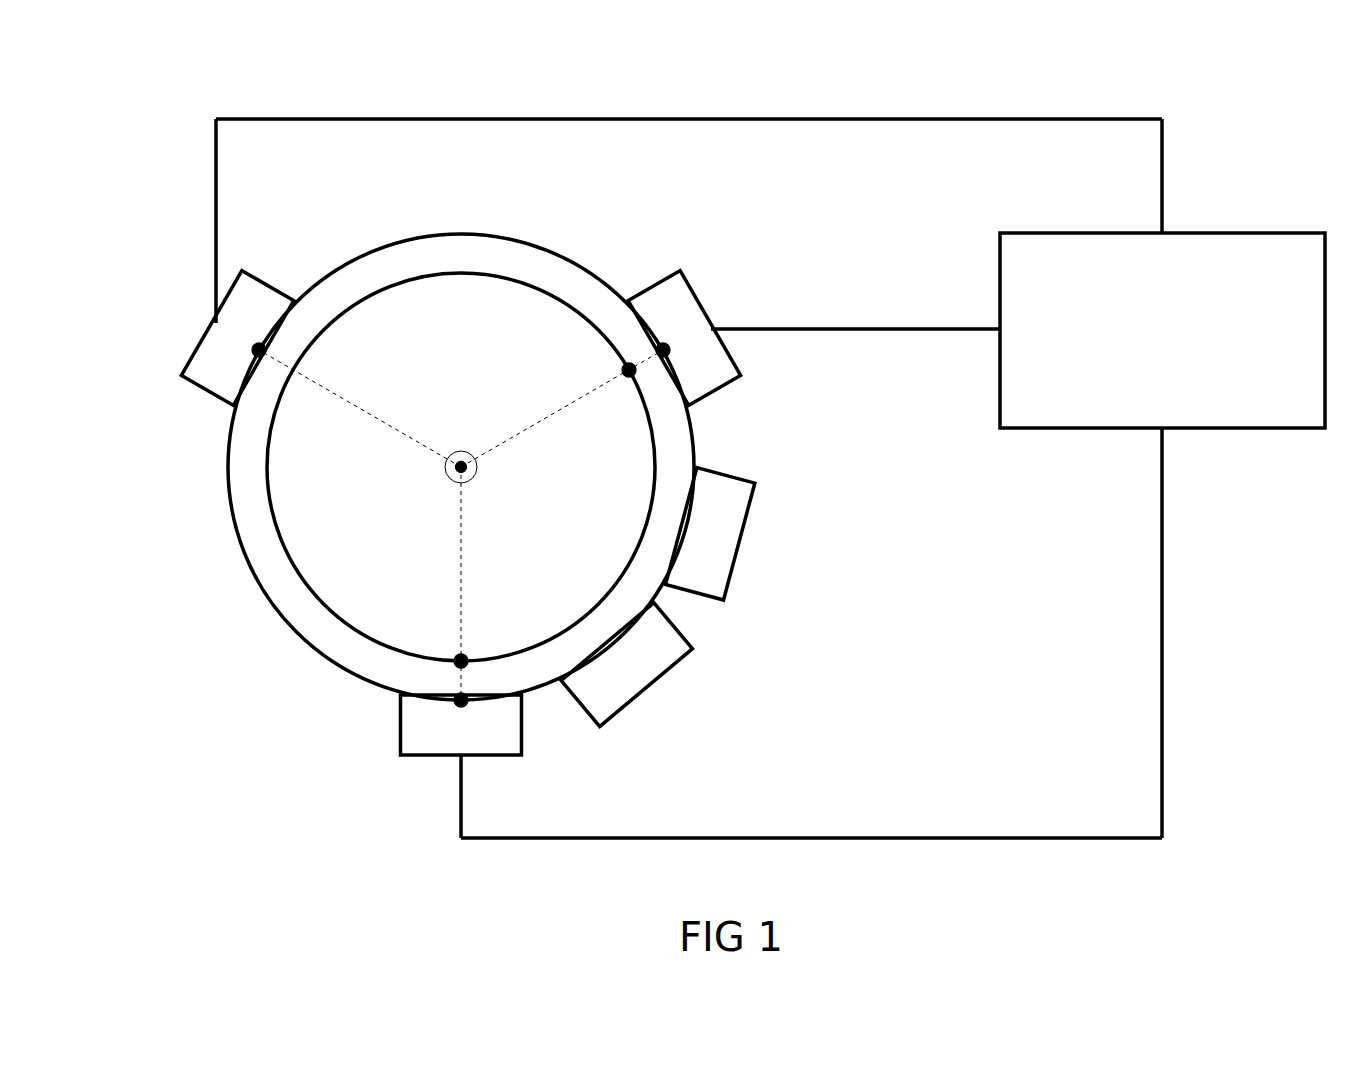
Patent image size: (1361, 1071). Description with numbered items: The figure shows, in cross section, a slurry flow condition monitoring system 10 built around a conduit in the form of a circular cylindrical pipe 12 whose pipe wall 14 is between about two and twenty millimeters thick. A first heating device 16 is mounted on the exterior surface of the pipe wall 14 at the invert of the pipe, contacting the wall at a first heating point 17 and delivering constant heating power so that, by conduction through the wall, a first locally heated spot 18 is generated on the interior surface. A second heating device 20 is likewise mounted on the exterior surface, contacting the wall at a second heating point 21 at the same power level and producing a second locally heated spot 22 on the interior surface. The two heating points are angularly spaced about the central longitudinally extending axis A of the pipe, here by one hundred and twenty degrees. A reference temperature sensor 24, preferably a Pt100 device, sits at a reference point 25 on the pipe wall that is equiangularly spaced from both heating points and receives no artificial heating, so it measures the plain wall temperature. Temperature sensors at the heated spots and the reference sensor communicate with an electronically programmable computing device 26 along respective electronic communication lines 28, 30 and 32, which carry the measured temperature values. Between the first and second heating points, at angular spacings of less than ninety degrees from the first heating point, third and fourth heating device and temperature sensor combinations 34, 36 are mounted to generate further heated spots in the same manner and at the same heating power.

The slurry flow condition monitoring system 10 is at (1240, 93).
The pipe 12 is at (716, 433).
The pipe wall 14 is at (253, 508).
The first heating device 16 is at (413, 767).
The first heating point 17 is at (455, 700).
The first locally heated spot 18 is at (463, 655).
The second heating device 20 is at (703, 270).
The second heating point 21 is at (663, 356).
The second locally heated spot 22 is at (626, 366).
The reference temperature sensor 24 is at (175, 341).
The reference point 25 is at (266, 352).
The electronically programmable computing device 26 is at (999, 405).
The electronic communication line 28 is at (781, 837).
The electronic communication line 30 is at (797, 328).
The electronic communication line 32 is at (745, 118).
The third heating device/temperature sensor combination 34 is at (658, 693).
The fourth heating device/temperature sensor combination 36 is at (755, 542).
The central longitudinally extending axis A is at (448, 468).